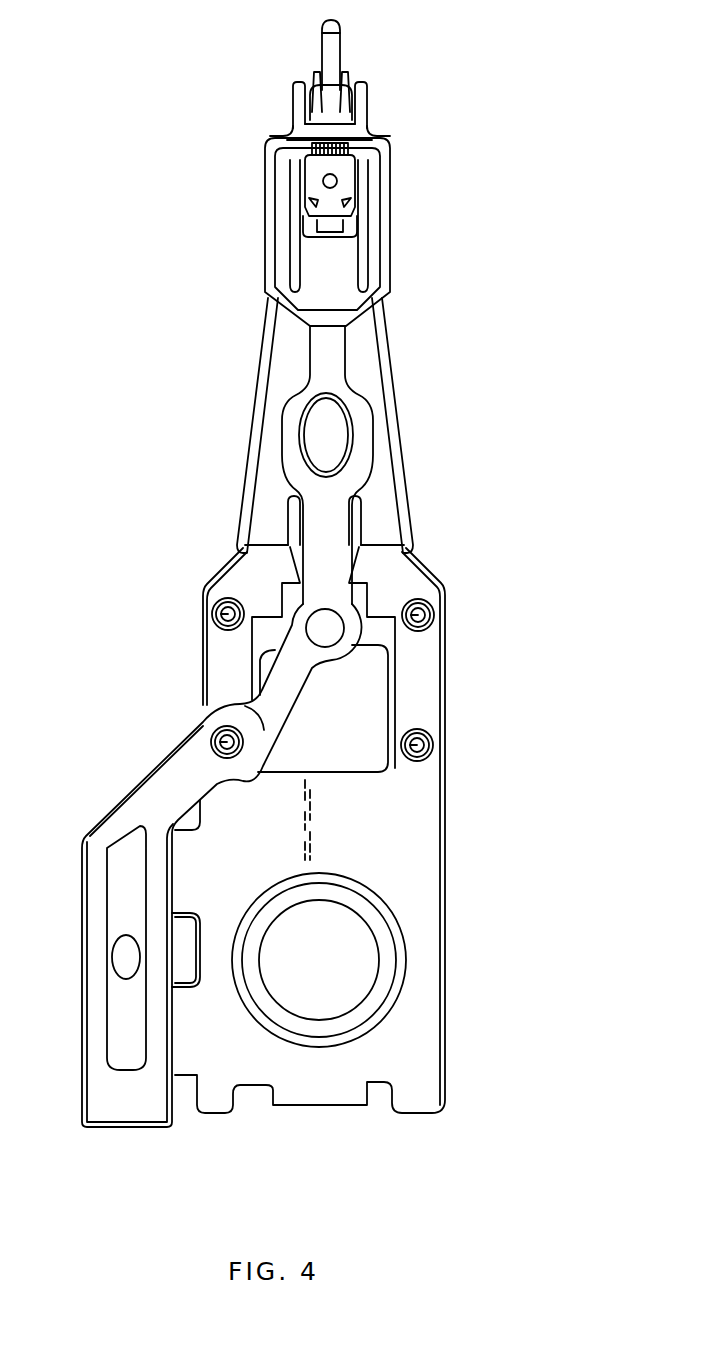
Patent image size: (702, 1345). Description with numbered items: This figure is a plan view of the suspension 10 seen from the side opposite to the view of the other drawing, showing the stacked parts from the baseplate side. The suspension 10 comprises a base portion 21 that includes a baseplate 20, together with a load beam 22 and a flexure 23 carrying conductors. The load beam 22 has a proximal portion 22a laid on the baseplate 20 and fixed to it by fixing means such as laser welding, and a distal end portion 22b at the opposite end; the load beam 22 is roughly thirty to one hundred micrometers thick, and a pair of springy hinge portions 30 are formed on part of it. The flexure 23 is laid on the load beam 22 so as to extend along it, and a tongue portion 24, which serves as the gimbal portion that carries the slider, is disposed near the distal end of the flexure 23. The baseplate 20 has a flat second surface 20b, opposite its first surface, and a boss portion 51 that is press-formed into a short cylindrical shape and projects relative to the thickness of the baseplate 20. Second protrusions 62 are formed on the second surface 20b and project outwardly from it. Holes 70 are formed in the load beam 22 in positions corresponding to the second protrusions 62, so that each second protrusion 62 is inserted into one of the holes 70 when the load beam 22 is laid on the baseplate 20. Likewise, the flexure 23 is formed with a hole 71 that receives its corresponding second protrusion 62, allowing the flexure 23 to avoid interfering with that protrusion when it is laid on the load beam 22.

The suspension 10 is at (150, 325).
The baseplate 20 is at (446, 1090).
The second surface 20b is at (384, 636).
The base portion 21 is at (446, 838).
The load beam 22 is at (393, 354).
The proximal portion 22a is at (424, 893).
The distal end portion 22b is at (345, 44).
The flexure 23 is at (266, 206).
The tongue portion 24 is at (345, 186).
The springy hinge portions 30 is at (243, 568).
The boss portion 51 is at (372, 963).
The second protrusions 62 is at (224, 612).
The holes 70 is at (232, 620).
The hole 71 is at (222, 722).